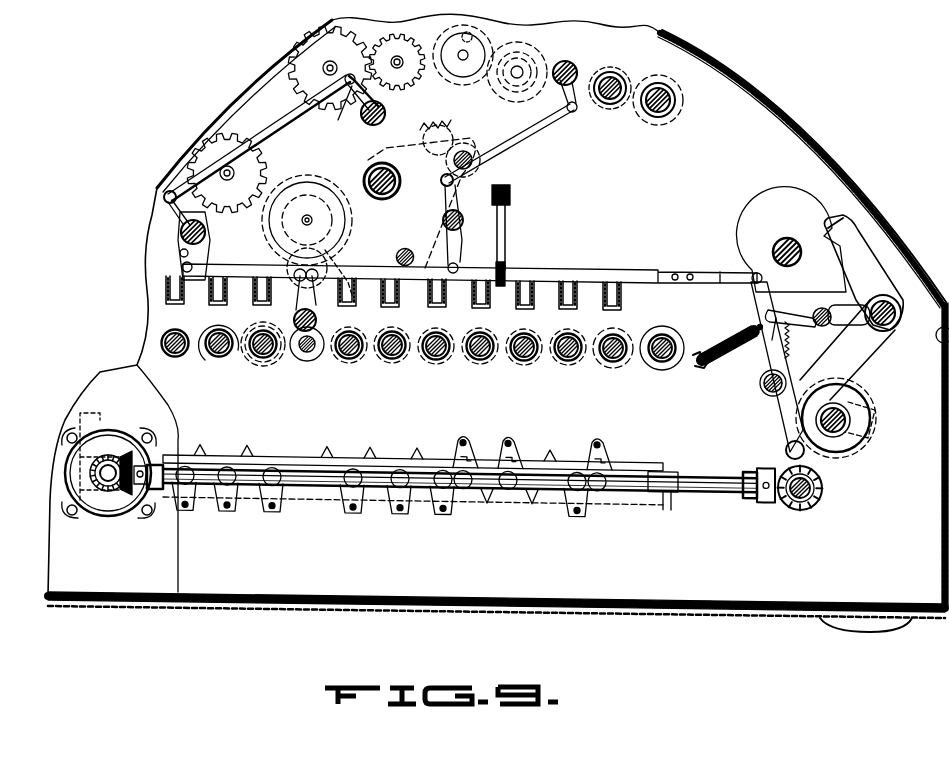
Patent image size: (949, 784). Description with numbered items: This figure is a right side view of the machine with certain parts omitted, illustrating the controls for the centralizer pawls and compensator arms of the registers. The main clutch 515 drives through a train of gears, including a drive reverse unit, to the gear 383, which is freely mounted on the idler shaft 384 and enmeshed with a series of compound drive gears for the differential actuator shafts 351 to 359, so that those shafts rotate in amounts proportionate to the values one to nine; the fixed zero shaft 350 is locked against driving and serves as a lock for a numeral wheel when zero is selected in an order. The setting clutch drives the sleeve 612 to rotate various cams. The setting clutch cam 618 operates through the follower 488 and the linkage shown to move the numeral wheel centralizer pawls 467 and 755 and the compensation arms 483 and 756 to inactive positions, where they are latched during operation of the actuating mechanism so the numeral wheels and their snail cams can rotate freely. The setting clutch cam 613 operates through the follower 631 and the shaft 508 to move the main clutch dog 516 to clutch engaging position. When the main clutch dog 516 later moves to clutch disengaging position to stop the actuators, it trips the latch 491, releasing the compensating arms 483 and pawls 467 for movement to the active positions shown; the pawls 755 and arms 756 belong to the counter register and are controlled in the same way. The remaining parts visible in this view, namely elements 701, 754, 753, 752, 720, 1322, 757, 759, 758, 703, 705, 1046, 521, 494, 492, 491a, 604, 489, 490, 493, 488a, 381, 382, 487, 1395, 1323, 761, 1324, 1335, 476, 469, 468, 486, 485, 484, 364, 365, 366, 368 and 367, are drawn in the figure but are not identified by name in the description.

The gear 701 is at (290, 54).
The lever 754 is at (272, 118).
The centralizer pawls 755 is at (332, 128).
The link 753 is at (356, 122).
The shaft 752 is at (379, 127).
The gear 720 is at (437, 128).
The stud 1322 is at (472, 136).
The compensation arms 756 is at (508, 46).
The stud 757 is at (574, 72).
The link 759 is at (536, 132).
The shaft 758 is at (590, 100).
The shaft 703 is at (628, 78).
The shaft 705 is at (618, 98).
The bearing 1046 is at (684, 98).
The main clutch 515 is at (842, 214).
The main clutch shaft 521 is at (786, 236).
The main clutch dog 516 is at (860, 288).
The link 494 is at (858, 306).
The shaft 508 is at (903, 310).
The latch 491 is at (788, 310).
The stud 492 is at (822, 306).
The arm 491a is at (848, 328).
The follower 631 is at (850, 362).
The shaft 604 is at (852, 416).
The setting clutch cam 613 is at (870, 432).
The sleeve 612 is at (840, 437).
The setting clutch cam 618 is at (826, 448).
The follower 488 is at (788, 440).
The stud 489 is at (764, 388).
The spring 490 is at (744, 360).
The spring 493 is at (795, 342).
The pin 488a is at (758, 324).
The idler shaft 384 is at (720, 328).
The gear 383 is at (674, 370).
The shaft 381 is at (626, 370).
The shaft 382 is at (603, 370).
The differential actuator shaft 359 is at (622, 335).
The bar 487 is at (638, 272).
The bar 1395 is at (508, 250).
The link 1323 is at (462, 235).
The shaft 761 is at (445, 190).
The stud 1324 is at (432, 244).
The plate 1335 is at (365, 176).
The gear 476 is at (290, 184).
The centralizer pawls 467 is at (162, 208).
The plate 469 is at (186, 230).
The shaft 468 is at (180, 238).
The stud 486 is at (182, 256).
The tabs 485 is at (223, 300).
The stud 484 is at (295, 306).
The compensation arms 483 is at (352, 298).
The fixed shaft 350 is at (174, 336).
The shaft 364 is at (208, 352).
The differential actuator shaft 351 is at (210, 358).
The shaft 365 is at (260, 362).
The shaft 366 is at (275, 366).
The shaft 368 is at (307, 358).
The shaft 367 is at (316, 368).